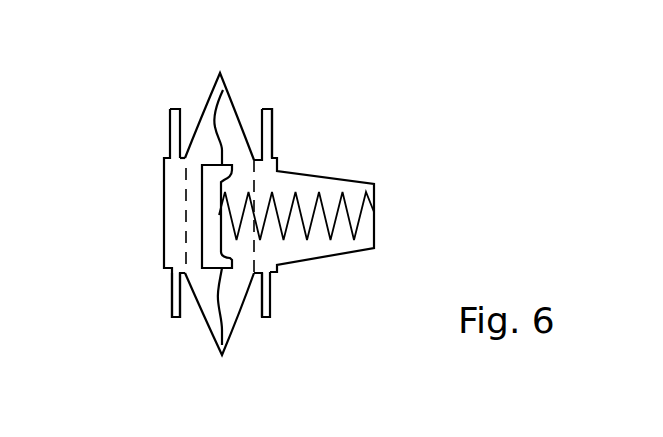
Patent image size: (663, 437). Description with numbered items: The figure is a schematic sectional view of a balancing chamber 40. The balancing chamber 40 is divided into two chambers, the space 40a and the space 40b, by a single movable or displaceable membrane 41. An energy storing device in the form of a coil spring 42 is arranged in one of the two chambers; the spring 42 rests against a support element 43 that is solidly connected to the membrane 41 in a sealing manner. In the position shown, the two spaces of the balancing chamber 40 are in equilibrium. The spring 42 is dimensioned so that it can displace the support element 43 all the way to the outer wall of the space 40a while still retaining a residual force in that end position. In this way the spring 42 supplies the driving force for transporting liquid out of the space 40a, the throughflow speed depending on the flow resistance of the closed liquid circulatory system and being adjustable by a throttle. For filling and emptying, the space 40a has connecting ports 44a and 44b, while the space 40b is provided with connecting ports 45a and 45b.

The balancing chamber 40 is at (365, 173).
The space 40a is at (178, 224).
The space 40b is at (230, 302).
The membrane 41 is at (232, 117).
The coil spring 42 is at (299, 194).
The support element 43 is at (202, 183).
The connecting port 44a is at (170, 132).
The connecting port 44b is at (171, 298).
The connecting port 45a is at (267, 125).
The connecting port 45b is at (266, 299).